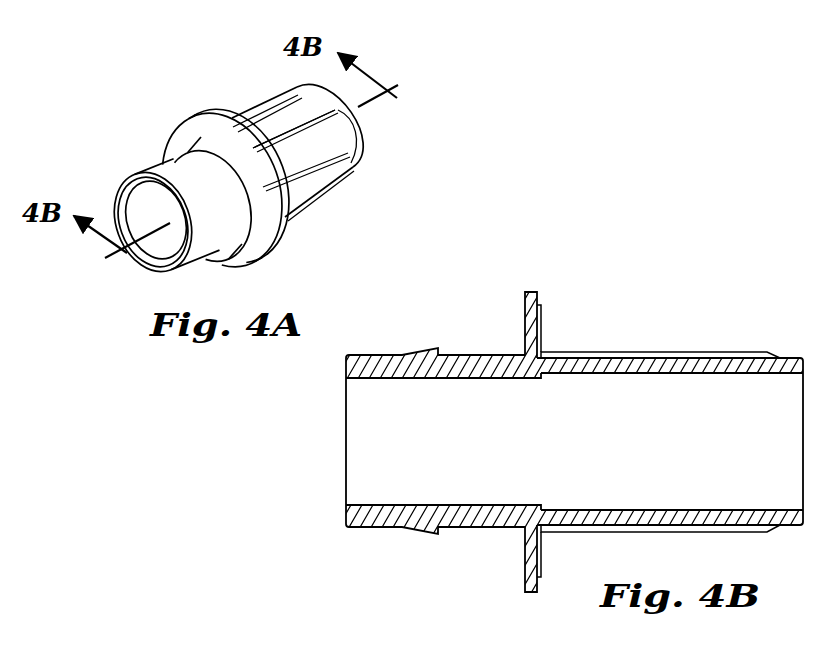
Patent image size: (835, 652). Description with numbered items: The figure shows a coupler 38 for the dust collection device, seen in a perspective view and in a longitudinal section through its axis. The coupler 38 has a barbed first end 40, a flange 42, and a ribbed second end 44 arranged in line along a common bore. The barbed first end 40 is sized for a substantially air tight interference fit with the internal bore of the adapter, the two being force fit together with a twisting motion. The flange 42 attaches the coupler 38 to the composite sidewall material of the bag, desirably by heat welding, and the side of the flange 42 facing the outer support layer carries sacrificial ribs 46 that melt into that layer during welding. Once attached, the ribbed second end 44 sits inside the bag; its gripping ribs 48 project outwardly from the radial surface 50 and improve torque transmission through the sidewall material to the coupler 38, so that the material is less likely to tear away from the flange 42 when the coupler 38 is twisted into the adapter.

In FIG. 4A, the coupler 38 is at (160, 114).
In FIG. 4B, the coupler 38 is at (724, 294).
In FIG. 4A, the barbed first end 40 is at (160, 171).
In FIG. 4B, the barbed first end 40 is at (425, 531).
In FIG. 4A, the flange 42 is at (263, 251).
In FIG. 4B, the flange 42 is at (530, 575).
In FIG. 4A, the ribbed second end 44 is at (353, 133).
In FIG. 4B, the ribbed second end 44 is at (777, 361).
In FIG. 4B, the sacrificial ribs 46 is at (539, 323).
In FIG. 4A, the gripping ribs 48 is at (344, 164).
In FIG. 4B, the gripping ribs 48 is at (662, 352).
In FIG. 4A, the radial surface 50 is at (270, 125).